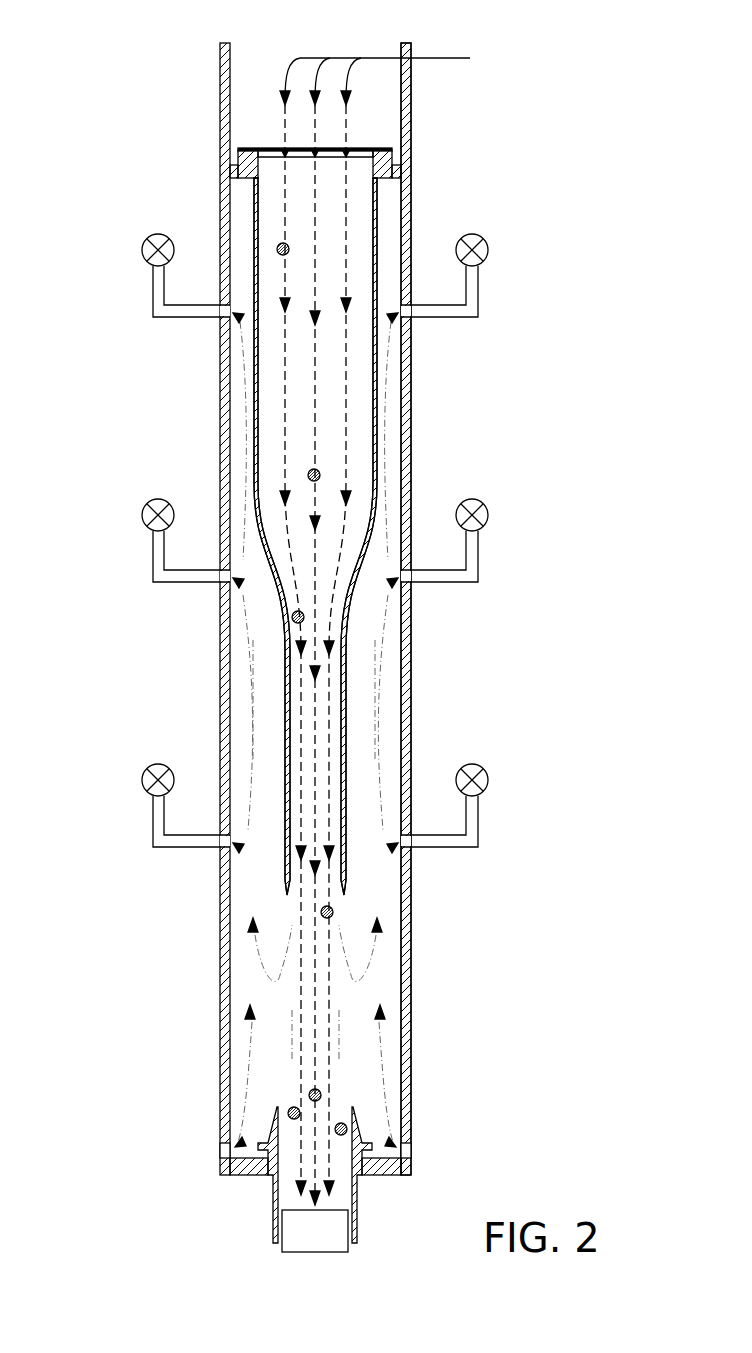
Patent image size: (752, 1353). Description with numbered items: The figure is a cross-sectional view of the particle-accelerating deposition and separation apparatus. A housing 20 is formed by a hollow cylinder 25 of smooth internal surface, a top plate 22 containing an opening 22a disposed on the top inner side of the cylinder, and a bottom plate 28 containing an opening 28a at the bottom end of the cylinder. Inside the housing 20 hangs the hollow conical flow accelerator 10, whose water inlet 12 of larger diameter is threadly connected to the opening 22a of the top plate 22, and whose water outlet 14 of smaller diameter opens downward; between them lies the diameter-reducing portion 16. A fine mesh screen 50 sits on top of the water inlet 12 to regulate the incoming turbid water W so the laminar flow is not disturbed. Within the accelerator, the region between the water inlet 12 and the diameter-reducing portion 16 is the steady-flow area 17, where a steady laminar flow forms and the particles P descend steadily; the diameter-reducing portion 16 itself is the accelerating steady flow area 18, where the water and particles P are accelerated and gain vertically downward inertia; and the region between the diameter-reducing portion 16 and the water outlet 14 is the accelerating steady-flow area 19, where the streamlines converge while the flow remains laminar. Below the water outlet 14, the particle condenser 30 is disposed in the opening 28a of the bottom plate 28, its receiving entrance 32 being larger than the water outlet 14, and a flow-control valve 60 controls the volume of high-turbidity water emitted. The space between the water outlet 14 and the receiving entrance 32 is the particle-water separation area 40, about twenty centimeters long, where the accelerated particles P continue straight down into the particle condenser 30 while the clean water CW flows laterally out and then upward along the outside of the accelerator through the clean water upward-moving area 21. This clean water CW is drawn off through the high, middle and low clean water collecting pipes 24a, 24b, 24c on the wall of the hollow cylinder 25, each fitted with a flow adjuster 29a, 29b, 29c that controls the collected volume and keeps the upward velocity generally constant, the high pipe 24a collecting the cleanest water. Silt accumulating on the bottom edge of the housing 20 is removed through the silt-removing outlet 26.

The hollow conical flow accelerator 10 is at (380, 388).
The water inlet 12 is at (330, 177).
The water outlet 14 is at (320, 866).
The diameter-reducing portion 16 is at (363, 548).
The steady-flow area 17 is at (320, 290).
The accelerating steady flow area 18 is at (308, 558).
The accelerating steady-flow area 19 is at (320, 755).
The housing 20 is at (420, 217).
The clean water upward-moving area 21 is at (365, 655).
The top plate 22 is at (238, 160).
The opening 22a is at (380, 174).
The high clean water collecting pipe 24a is at (225, 317).
The middle clean water collecting pipe 24b is at (225, 582).
The low clean water collecting pipe 24c is at (225, 845).
The hollow cylinder 25 is at (412, 460).
The silt-removing outlet 26 is at (222, 1150).
The bottom plate 28 is at (245, 1172).
The opening 28a is at (270, 1172).
The flow adjuster 29a is at (142, 250).
The flow adjuster 29b is at (142, 515).
The flow adjuster 29c is at (142, 780).
The particle condenser 30 is at (353, 1222).
The receiving entrance 32 is at (353, 1103).
The particle-water separation area 40 is at (328, 985).
The No. 200 screen 50 is at (277, 150).
The flow-control valve 60 is at (333, 1240).
The turbid water W is at (348, 58).
The clean water CW is at (373, 963).
The particles P is at (310, 1093).